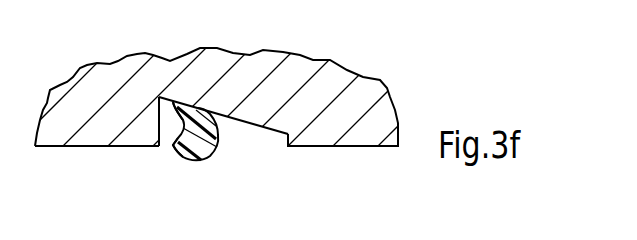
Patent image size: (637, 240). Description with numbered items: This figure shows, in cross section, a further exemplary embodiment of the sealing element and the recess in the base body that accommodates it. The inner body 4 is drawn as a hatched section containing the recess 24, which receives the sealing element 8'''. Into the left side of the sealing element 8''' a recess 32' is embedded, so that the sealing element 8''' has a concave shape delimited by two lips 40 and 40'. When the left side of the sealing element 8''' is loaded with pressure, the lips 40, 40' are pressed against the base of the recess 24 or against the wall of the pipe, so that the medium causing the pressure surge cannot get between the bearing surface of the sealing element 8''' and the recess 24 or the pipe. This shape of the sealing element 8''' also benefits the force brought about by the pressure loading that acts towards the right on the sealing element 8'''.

The inner body 4 is at (45, 147).
The recess 24 is at (254, 114).
The recess 32' is at (124, 158).
The sealing element 8''' is at (206, 83).
The lip 40 is at (165, 63).
The lip 40' is at (165, 178).